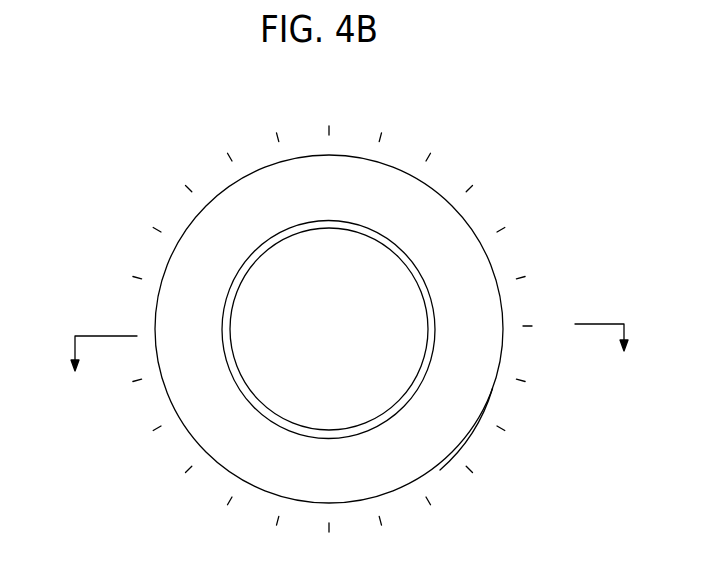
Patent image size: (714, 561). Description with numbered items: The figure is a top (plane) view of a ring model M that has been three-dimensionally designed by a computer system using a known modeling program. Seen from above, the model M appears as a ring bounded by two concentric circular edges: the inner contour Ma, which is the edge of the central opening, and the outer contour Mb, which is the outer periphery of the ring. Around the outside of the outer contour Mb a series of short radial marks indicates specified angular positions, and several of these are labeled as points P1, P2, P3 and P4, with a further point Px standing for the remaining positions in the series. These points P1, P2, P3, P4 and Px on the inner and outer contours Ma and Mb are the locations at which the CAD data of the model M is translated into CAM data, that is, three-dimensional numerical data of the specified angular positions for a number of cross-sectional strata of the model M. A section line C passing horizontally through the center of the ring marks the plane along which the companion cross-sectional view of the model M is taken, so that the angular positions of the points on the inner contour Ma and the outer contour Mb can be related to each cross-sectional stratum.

The model M is at (125, 221).
The inner contour Ma is at (427, 340).
The outer contour Mb is at (488, 402).
The point Px is at (268, 124).
The point P1 is at (327, 115).
The point P2 is at (379, 123).
The point P3 is at (432, 141).
The point P4 is at (478, 172).
The section line C- C is at (352, 363).